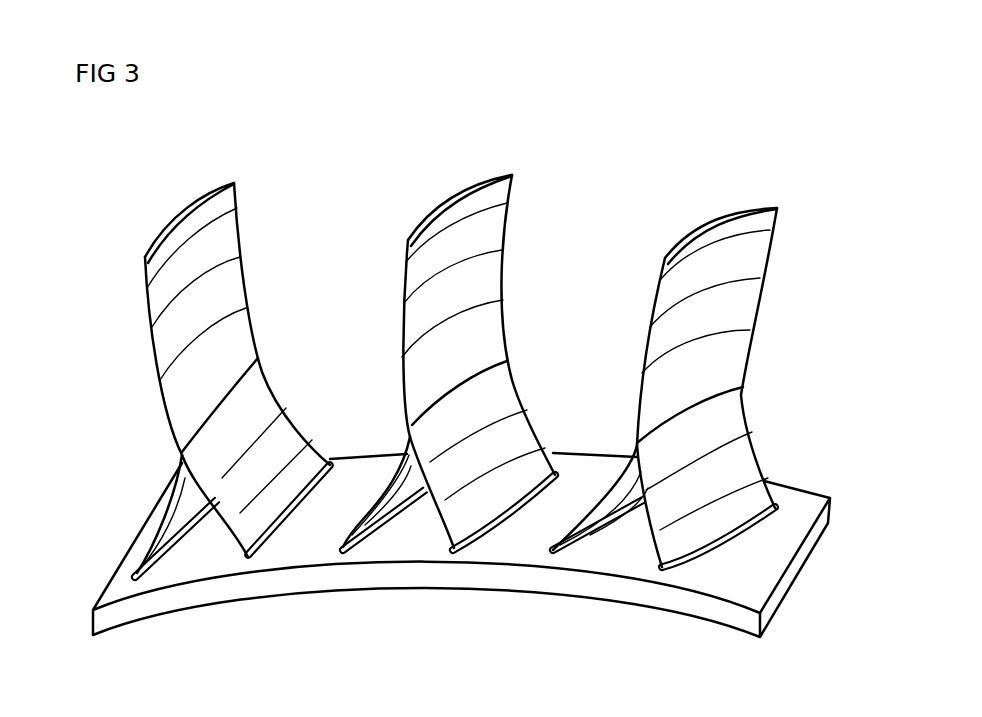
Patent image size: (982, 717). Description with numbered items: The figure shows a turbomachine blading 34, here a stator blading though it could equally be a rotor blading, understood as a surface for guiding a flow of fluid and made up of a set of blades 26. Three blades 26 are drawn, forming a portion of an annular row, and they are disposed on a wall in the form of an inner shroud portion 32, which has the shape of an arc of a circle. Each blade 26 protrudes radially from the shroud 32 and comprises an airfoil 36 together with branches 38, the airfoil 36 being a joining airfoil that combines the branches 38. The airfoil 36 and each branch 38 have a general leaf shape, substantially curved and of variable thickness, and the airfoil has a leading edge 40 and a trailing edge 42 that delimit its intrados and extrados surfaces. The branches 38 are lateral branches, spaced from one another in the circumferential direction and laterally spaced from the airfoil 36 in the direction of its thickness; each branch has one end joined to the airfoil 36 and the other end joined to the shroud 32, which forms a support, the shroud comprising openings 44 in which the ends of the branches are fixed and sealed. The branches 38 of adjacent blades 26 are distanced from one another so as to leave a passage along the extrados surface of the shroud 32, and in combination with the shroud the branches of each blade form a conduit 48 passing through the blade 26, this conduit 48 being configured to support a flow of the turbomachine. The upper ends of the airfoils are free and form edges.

The blade 26 is at (146, 222).
The inner shroud portion 32 is at (393, 573).
The turbomachine blading 34 is at (734, 138).
The airfoil 36 is at (237, 335).
The branch 38 is at (167, 523).
The leading edge 40 is at (152, 344).
The trailing edge 42 is at (244, 287).
The opening 44 is at (256, 550).
The conduit 48 is at (223, 541).